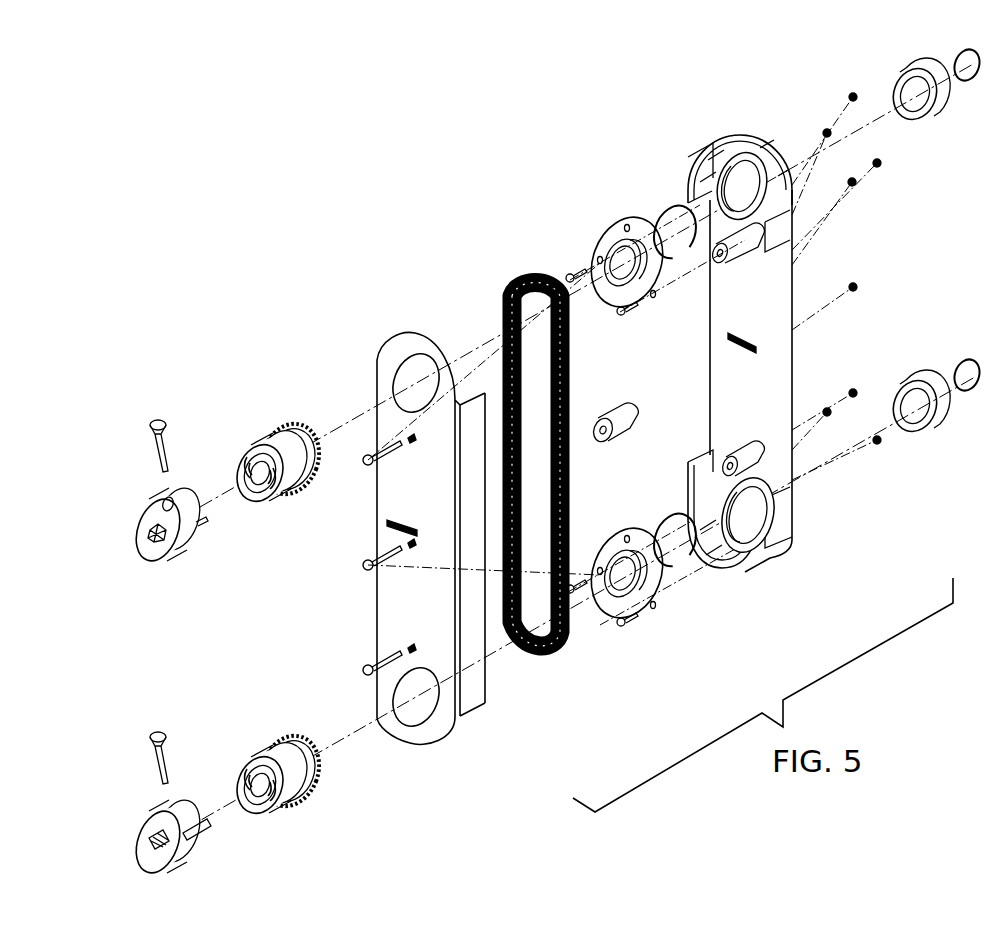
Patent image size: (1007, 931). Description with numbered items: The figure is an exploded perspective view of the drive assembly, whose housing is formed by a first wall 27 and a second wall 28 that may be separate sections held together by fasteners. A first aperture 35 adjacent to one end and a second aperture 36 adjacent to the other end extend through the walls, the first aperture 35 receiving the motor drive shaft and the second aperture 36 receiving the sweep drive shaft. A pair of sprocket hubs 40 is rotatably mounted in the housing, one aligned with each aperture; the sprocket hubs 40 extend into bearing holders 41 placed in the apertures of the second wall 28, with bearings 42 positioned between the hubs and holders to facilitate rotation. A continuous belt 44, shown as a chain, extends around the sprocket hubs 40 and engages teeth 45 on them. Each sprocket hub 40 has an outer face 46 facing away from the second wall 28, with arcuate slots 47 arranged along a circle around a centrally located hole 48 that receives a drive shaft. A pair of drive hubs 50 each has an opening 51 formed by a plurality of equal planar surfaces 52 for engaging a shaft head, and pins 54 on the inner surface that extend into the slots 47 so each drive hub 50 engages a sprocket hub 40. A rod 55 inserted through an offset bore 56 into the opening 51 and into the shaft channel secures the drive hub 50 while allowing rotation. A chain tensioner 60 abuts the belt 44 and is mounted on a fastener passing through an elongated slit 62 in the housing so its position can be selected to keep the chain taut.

The first wall 27 is at (437, 625).
The second wall 28 is at (795, 352).
The first aperture 35 is at (694, 160).
The second aperture 36 is at (738, 560).
The sprocket hub 40 is at (283, 797).
The bearing holder 41 is at (640, 612).
The bearing 42 is at (918, 430).
The belt 44 is at (522, 286).
The teeth 45 is at (286, 740).
The outer face 46 is at (238, 629).
The slot 47 is at (272, 808).
The centrally located hole 48 is at (250, 764).
The drive hub 50 is at (138, 848).
The opening 51 is at (150, 540).
The planar surface 52 is at (158, 836).
The pin 54 is at (208, 838).
The rod 55 is at (150, 737).
The bore 56 is at (163, 504).
The chain tensioner 60 is at (613, 442).
The elongated slit 62 is at (760, 330).